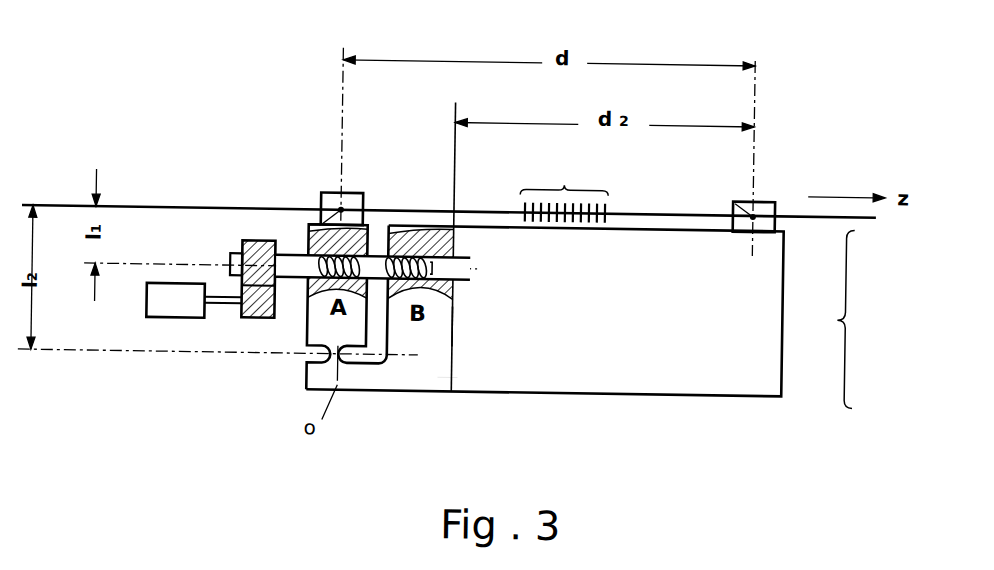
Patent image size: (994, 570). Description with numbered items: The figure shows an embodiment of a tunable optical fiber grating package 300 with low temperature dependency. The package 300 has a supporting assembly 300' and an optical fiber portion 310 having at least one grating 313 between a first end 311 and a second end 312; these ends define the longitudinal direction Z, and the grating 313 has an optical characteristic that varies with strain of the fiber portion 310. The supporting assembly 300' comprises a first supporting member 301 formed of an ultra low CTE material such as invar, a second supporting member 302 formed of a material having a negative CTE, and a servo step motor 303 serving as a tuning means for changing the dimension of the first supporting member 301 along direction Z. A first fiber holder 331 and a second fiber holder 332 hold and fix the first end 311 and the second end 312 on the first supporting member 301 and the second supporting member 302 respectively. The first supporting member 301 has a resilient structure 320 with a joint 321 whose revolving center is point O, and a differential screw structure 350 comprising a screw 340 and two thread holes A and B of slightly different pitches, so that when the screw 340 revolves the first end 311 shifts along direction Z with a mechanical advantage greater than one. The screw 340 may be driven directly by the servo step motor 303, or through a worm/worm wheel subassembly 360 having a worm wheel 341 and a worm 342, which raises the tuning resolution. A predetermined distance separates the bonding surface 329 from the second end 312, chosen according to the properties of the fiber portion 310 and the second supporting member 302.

The tunable optical fiber grating package 300 is at (94, 15).
The supporting assembly 300' is at (874, 319).
The first supporting member 301 is at (440, 371).
The second supporting member 302 is at (700, 366).
The servo step motor 303 is at (167, 315).
The optical fiber portion 310 is at (670, 203).
The first end 311 is at (341, 205).
The second end 312 is at (738, 191).
The grating 313 is at (565, 176).
The resilient structure 320 is at (347, 307).
The joint 321 is at (312, 353).
The bonding surface 329 is at (456, 323).
The first fiber holder 331 is at (332, 187).
The second fiber holder 332 is at (773, 190).
The screw 340 is at (382, 292).
The worm wheel 341 is at (223, 296).
The worm 342 is at (253, 315).
The differential screw structure 350 is at (410, 237).
The worm/worm wheel subassembly 360 is at (254, 263).